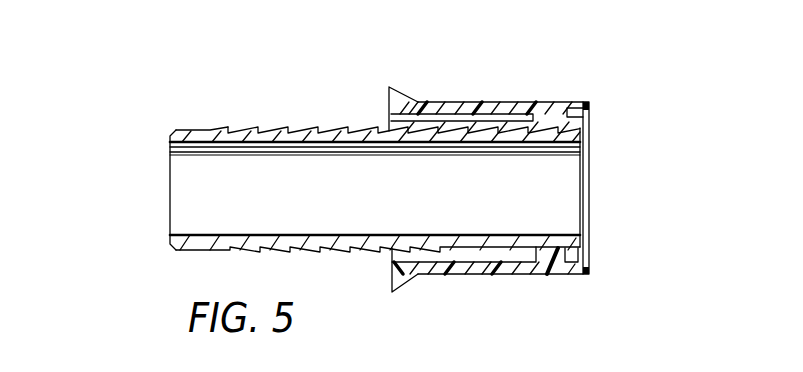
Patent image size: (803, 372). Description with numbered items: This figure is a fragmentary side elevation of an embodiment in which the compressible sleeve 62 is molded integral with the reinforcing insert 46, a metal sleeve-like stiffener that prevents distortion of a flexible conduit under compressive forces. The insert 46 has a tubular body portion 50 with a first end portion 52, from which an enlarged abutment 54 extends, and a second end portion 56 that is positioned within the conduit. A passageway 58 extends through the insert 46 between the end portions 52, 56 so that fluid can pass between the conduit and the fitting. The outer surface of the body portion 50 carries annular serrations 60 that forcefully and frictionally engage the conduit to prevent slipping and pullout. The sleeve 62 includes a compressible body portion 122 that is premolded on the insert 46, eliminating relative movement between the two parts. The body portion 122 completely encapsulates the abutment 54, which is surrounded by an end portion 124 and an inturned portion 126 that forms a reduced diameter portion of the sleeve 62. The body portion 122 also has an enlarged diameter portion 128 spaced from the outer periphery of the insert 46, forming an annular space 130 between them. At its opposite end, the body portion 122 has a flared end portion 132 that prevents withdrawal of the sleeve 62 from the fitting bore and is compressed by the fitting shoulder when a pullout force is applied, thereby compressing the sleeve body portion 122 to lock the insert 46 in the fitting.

The reinforcing insert 46 is at (168, 178).
The second end portion 56 is at (203, 134).
The serrations 60 is at (287, 132).
The passageway 58 is at (341, 199).
The tubular body portion 50 is at (402, 128).
The first end portion 52 is at (562, 143).
The flared end portion 132 is at (392, 92).
The compressible body portion 122 is at (514, 102).
The compressible sleeve 62 is at (468, 96).
The annular space 130 is at (500, 121).
The abutment 54 is at (573, 122).
The enlarged diameter portion 128 is at (458, 275).
The inturned portion 126 is at (560, 257).
The end portion 124 is at (573, 244).